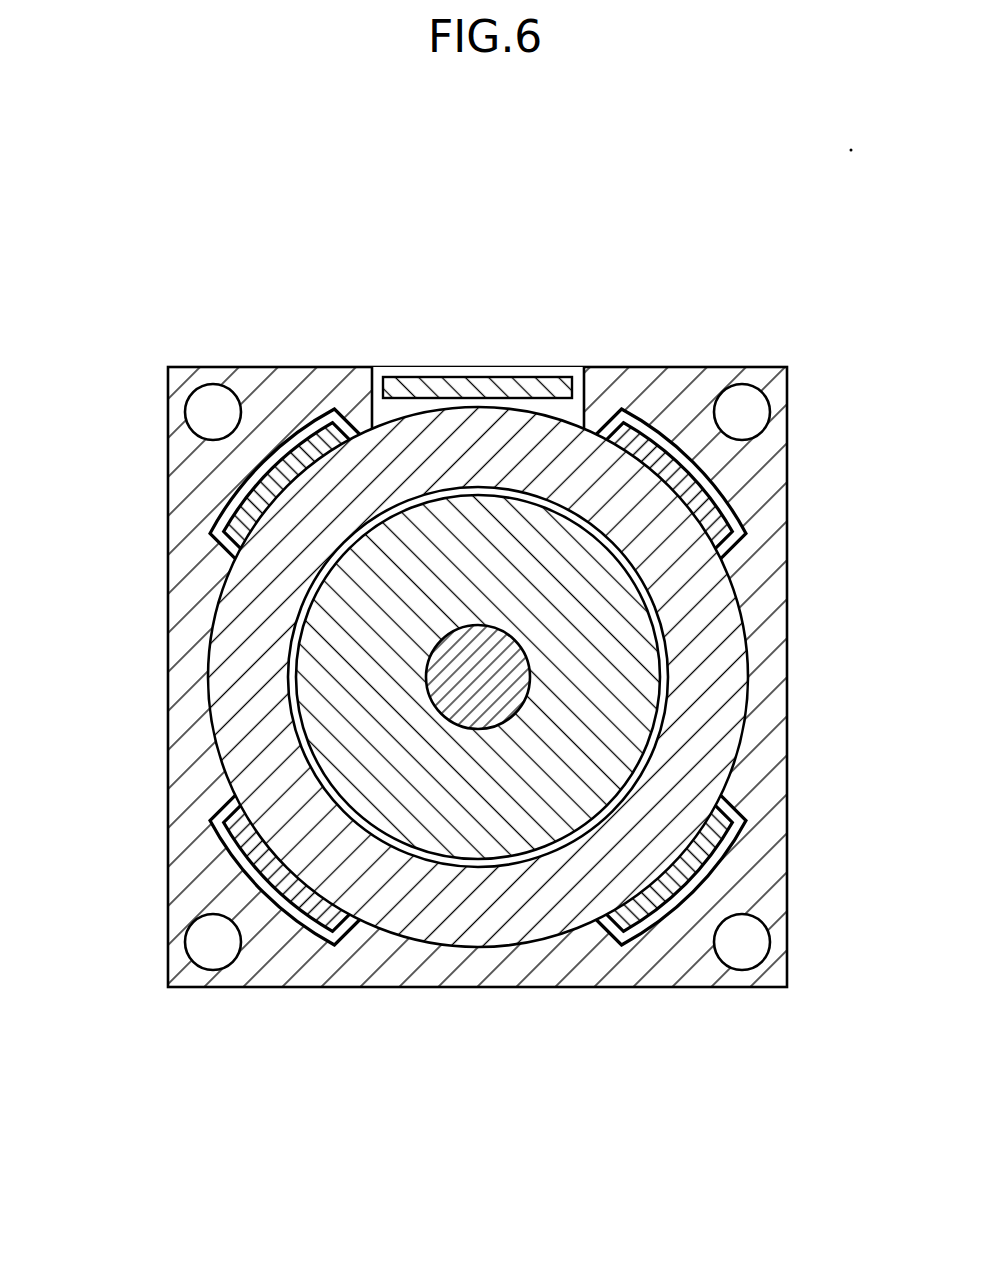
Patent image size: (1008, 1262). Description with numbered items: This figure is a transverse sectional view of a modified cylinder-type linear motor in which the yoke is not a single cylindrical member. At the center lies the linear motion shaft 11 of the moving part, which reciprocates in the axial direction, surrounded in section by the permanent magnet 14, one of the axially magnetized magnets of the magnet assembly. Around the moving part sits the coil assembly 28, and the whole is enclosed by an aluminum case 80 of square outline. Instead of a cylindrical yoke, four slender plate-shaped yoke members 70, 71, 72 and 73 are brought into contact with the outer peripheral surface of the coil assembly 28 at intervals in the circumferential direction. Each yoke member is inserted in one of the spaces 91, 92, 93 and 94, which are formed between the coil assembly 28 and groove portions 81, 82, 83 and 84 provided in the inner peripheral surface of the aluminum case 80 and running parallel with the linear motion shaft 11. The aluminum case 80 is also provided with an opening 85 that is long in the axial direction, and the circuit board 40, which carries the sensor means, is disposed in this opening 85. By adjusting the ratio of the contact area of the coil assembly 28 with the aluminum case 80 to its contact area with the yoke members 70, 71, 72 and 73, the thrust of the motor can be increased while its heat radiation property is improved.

The linear motion shaft 11 is at (505, 665).
The permanent magnet 14 is at (622, 715).
The coil assembly 28 is at (245, 718).
The circuit board 40 is at (508, 388).
The yoke member 70 is at (302, 452).
The yoke member 71 is at (713, 508).
The yoke member 72 is at (665, 893).
The yoke member 73 is at (303, 900).
The aluminum case 80 is at (190, 627).
The groove portion 81 is at (210, 544).
The groove portion 82 is at (652, 412).
The groove portion 83 is at (727, 853).
The groove portion 84 is at (223, 873).
The opening 85 is at (393, 376).
The space 91 is at (245, 483).
The space 92 is at (665, 440).
The space 93 is at (677, 908).
The space 94 is at (270, 903).